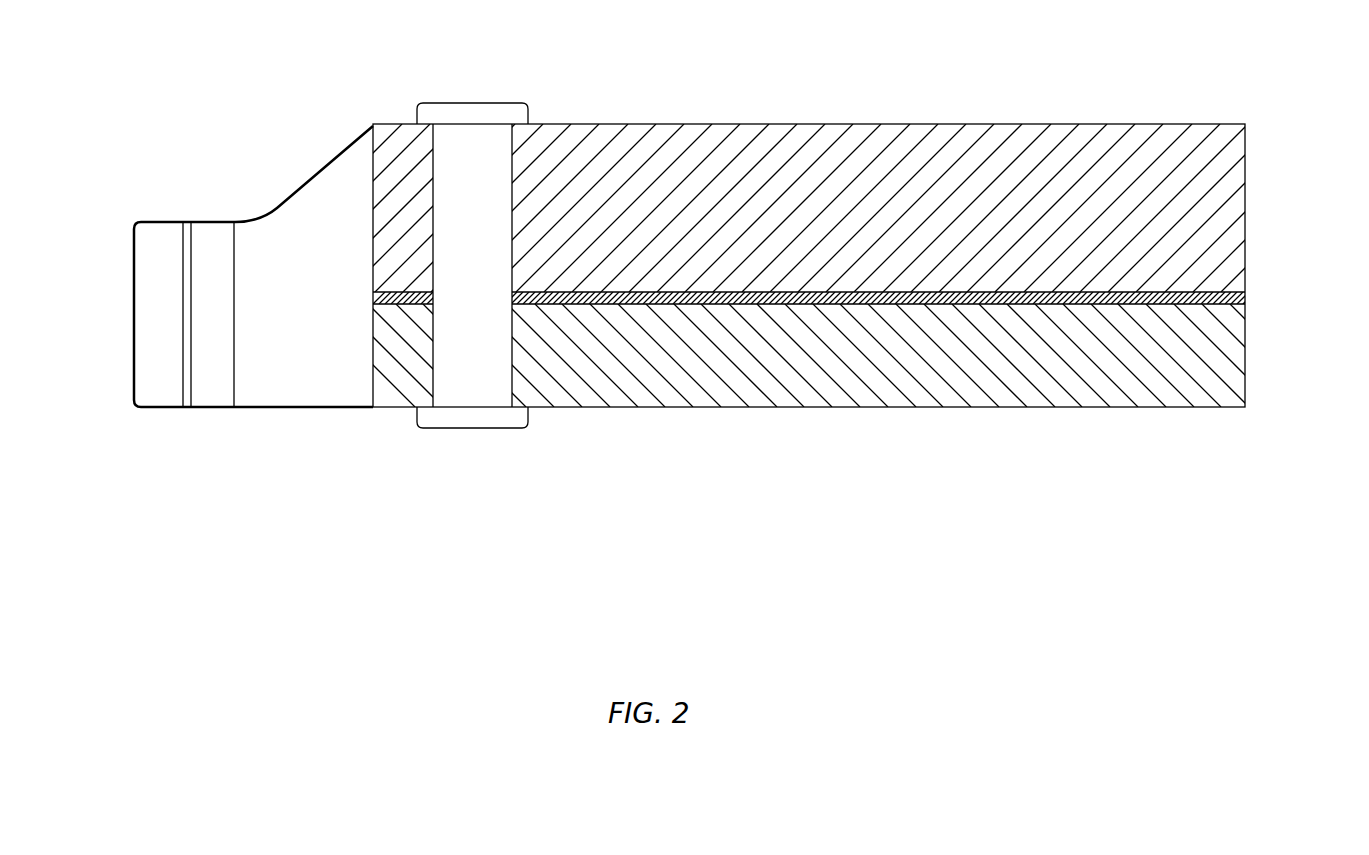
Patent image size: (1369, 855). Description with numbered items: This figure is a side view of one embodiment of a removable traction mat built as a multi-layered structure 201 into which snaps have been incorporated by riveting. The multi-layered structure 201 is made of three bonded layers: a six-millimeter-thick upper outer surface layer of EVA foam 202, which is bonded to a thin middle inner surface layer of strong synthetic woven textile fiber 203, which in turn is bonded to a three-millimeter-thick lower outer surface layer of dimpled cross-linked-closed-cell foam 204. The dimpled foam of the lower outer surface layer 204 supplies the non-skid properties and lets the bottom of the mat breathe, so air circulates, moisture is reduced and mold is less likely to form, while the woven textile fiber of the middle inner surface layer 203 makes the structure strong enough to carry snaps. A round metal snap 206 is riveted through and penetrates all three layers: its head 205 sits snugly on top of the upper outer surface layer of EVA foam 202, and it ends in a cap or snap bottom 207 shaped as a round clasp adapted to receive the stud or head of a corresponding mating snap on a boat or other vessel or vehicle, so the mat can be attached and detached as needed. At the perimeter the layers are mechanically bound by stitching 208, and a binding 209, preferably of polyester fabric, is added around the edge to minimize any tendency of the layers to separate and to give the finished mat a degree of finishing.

The multi-layered structure 201 is at (872, 123).
The upper outer surface layer of EVA foam 202 is at (1245, 195).
The middle inner surface layer of strong synthetic woven textile fiber 203 is at (1245, 295).
The lower outer surface layer of dimpled cross-linked-closed-cell foam 204 is at (870, 398).
The head 205 is at (475, 102).
The round metal snap 206 is at (468, 207).
The cap or snap bottom 207 is at (473, 430).
The stitching 208 is at (180, 258).
The binding 209 is at (277, 208).